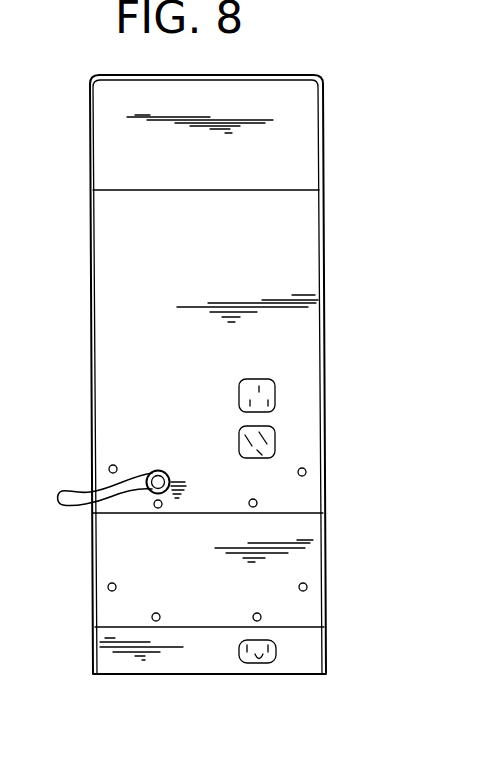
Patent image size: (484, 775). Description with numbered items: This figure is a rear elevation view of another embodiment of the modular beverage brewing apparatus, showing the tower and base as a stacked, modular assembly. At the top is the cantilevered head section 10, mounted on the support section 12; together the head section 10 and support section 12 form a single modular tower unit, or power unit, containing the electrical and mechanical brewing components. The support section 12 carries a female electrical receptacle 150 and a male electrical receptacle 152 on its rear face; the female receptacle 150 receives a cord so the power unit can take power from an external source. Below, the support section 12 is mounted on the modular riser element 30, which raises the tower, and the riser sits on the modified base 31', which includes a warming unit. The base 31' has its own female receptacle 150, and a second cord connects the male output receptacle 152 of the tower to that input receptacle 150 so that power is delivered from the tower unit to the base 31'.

The cantilevered head section 10 is at (115, 156).
The support section 12 is at (305, 263).
The female electrical receptacle 150 is at (268, 395).
The male electrical receptacle 152 is at (270, 441).
The modular riser element 30 is at (110, 558).
The modified base 31' is at (252, 646).